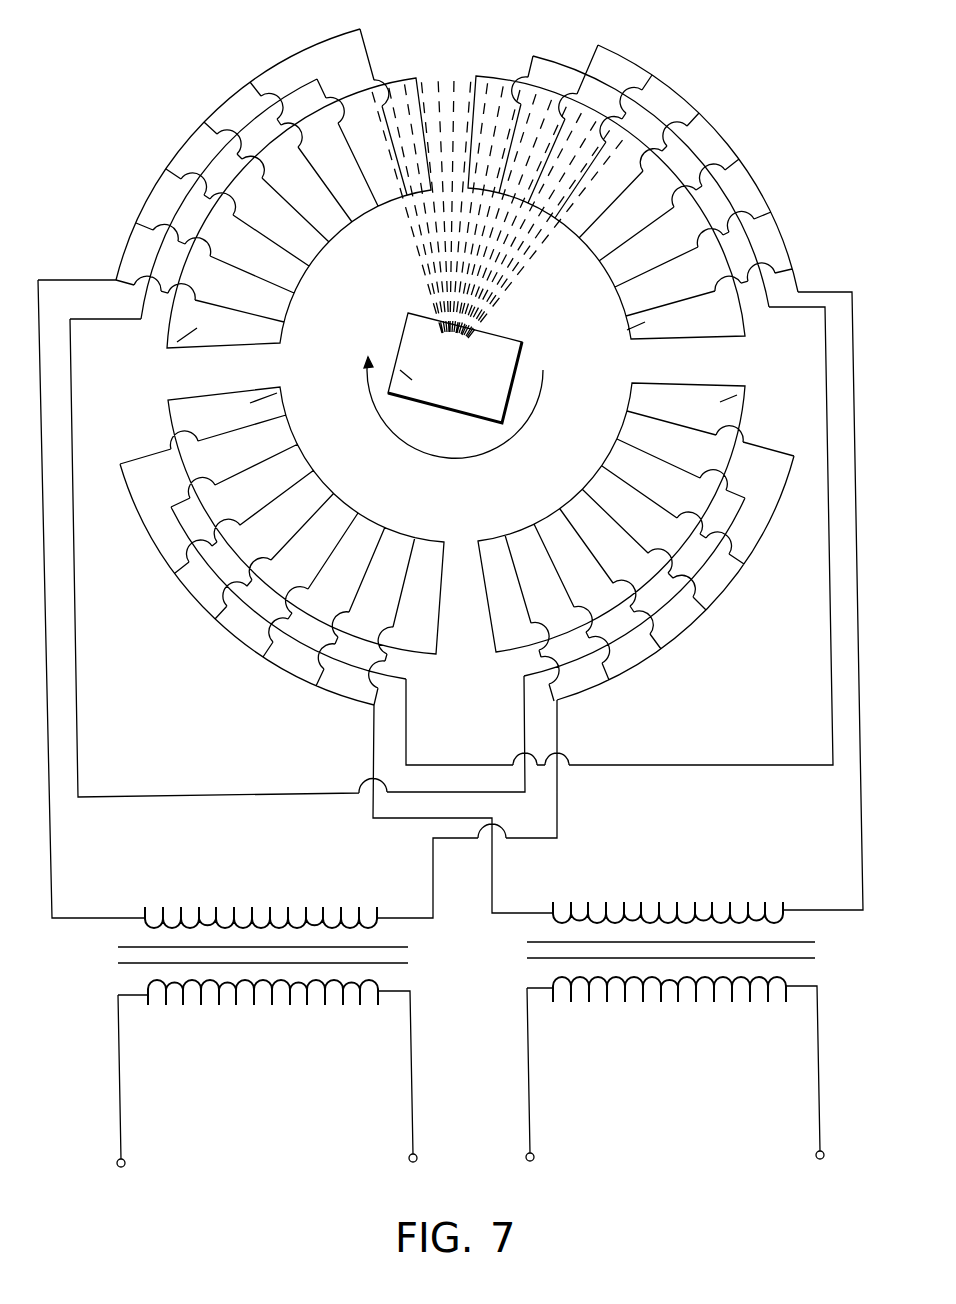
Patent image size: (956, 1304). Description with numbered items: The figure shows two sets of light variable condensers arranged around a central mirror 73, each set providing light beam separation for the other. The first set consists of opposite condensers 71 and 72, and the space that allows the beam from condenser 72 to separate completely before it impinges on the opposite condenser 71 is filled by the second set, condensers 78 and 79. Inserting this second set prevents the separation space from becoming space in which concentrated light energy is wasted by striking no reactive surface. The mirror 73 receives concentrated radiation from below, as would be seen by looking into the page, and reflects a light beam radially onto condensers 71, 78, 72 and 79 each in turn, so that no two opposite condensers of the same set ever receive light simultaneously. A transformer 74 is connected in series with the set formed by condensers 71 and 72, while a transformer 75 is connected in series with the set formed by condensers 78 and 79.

The condenser 71 is at (623, 333).
The condenser 72 is at (285, 387).
The mirror 73 is at (390, 357).
The transformer 74 is at (822, 940).
The transformer 75 is at (128, 930).
The condenser 78 is at (750, 392).
The condenser 79 is at (167, 348).